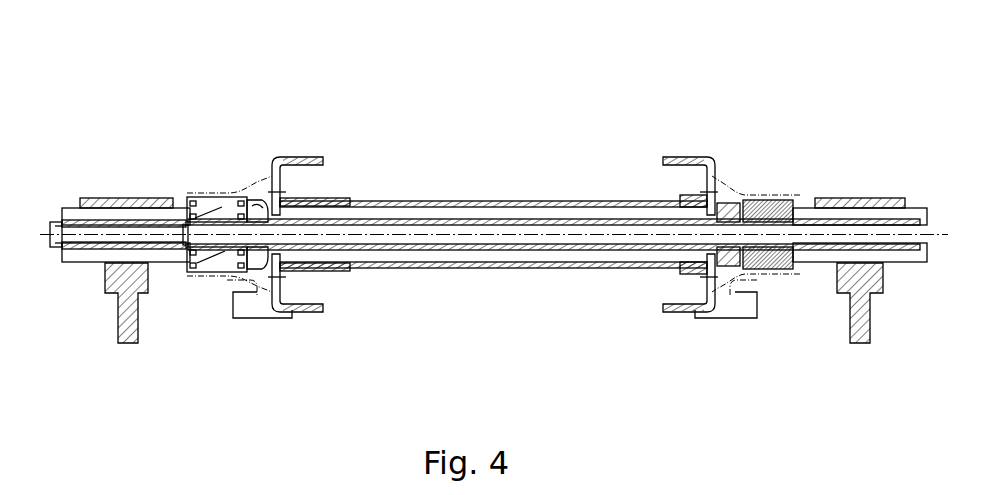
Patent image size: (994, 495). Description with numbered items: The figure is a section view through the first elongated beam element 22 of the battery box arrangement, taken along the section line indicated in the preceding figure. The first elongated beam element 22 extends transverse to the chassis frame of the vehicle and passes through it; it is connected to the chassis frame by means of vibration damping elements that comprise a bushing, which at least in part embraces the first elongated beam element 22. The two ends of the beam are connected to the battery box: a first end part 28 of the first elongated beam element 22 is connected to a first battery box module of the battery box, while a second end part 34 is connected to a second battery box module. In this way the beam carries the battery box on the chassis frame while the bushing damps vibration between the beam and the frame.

The first elongated beam element 22 is at (433, 220).
The first end part 28 is at (903, 262).
The second end part 34 is at (85, 258).